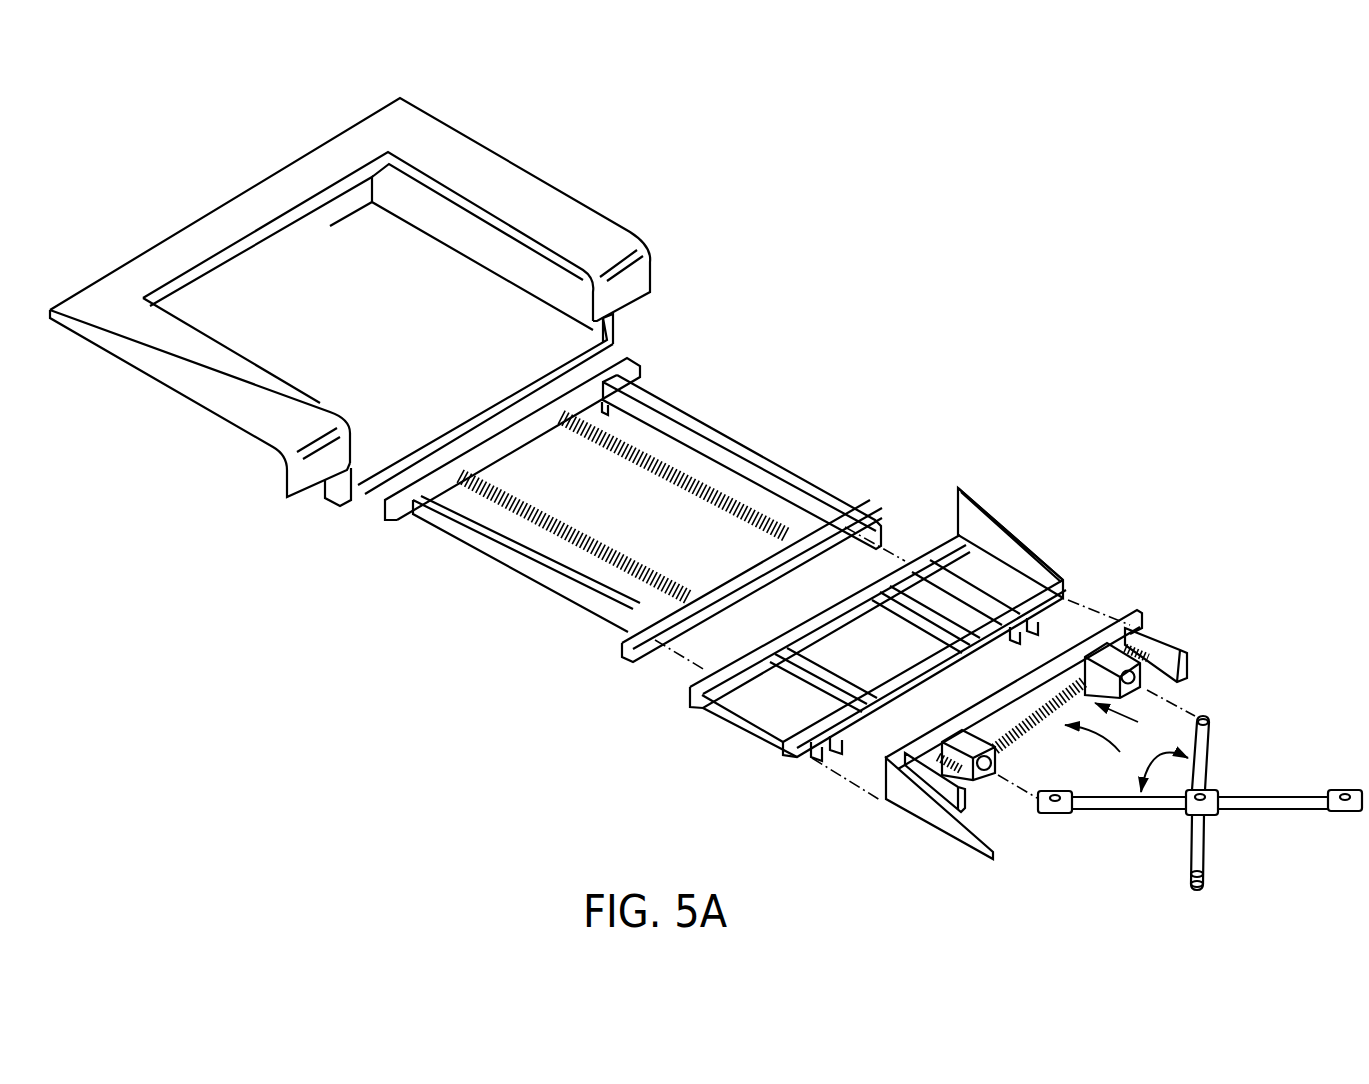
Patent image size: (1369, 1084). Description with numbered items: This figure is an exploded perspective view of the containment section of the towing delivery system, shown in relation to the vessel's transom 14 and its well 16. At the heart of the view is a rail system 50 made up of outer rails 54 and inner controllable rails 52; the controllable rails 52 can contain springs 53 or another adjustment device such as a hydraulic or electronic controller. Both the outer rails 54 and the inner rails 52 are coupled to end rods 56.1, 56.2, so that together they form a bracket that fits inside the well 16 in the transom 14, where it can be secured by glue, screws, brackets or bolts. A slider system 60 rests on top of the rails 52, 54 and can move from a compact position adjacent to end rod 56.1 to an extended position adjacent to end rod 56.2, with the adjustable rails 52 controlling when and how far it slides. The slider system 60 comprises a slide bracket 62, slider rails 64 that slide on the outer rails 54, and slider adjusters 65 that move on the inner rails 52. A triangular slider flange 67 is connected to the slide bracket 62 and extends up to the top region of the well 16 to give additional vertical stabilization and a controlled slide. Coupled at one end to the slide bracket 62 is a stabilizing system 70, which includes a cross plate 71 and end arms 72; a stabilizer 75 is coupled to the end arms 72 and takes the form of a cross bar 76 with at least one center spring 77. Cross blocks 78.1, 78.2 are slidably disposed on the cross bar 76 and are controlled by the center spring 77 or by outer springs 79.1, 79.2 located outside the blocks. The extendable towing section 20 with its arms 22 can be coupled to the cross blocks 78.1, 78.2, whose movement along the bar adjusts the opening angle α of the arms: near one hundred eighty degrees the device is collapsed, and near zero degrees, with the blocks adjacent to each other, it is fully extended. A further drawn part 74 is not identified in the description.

The transom 14 is at (226, 222).
The well 16 is at (463, 333).
The towing section 20 is at (1200, 780).
The arms 22 is at (1203, 760).
The rail system 50 is at (517, 516).
The controllable rails 52 is at (685, 465).
The springs 53 is at (718, 497).
The outer rails 54 is at (470, 530).
The end rod 56.1 is at (383, 506).
The end rod 56.2 is at (626, 658).
The slider system 60 is at (801, 562).
The slide bracket 62 is at (983, 483).
The slider rails 64 is at (757, 706).
The slider adjusters 65 is at (820, 675).
The slider flange 67 is at (1010, 527).
The stabilizing system 70 is at (1025, 689).
The cross plate 71 is at (980, 698).
The end arms 72 is at (1188, 668).
The wedge plate 74 is at (902, 800).
The stabilizer 75 is at (1130, 719).
The cross bar 76 is at (1103, 751).
The center spring 77 is at (1027, 728).
The cross block 78.1 is at (938, 755).
The cross block 78.2 is at (1140, 623).
The outer spring 79.1 is at (996, 775).
The outer spring 79.2 is at (1140, 653).